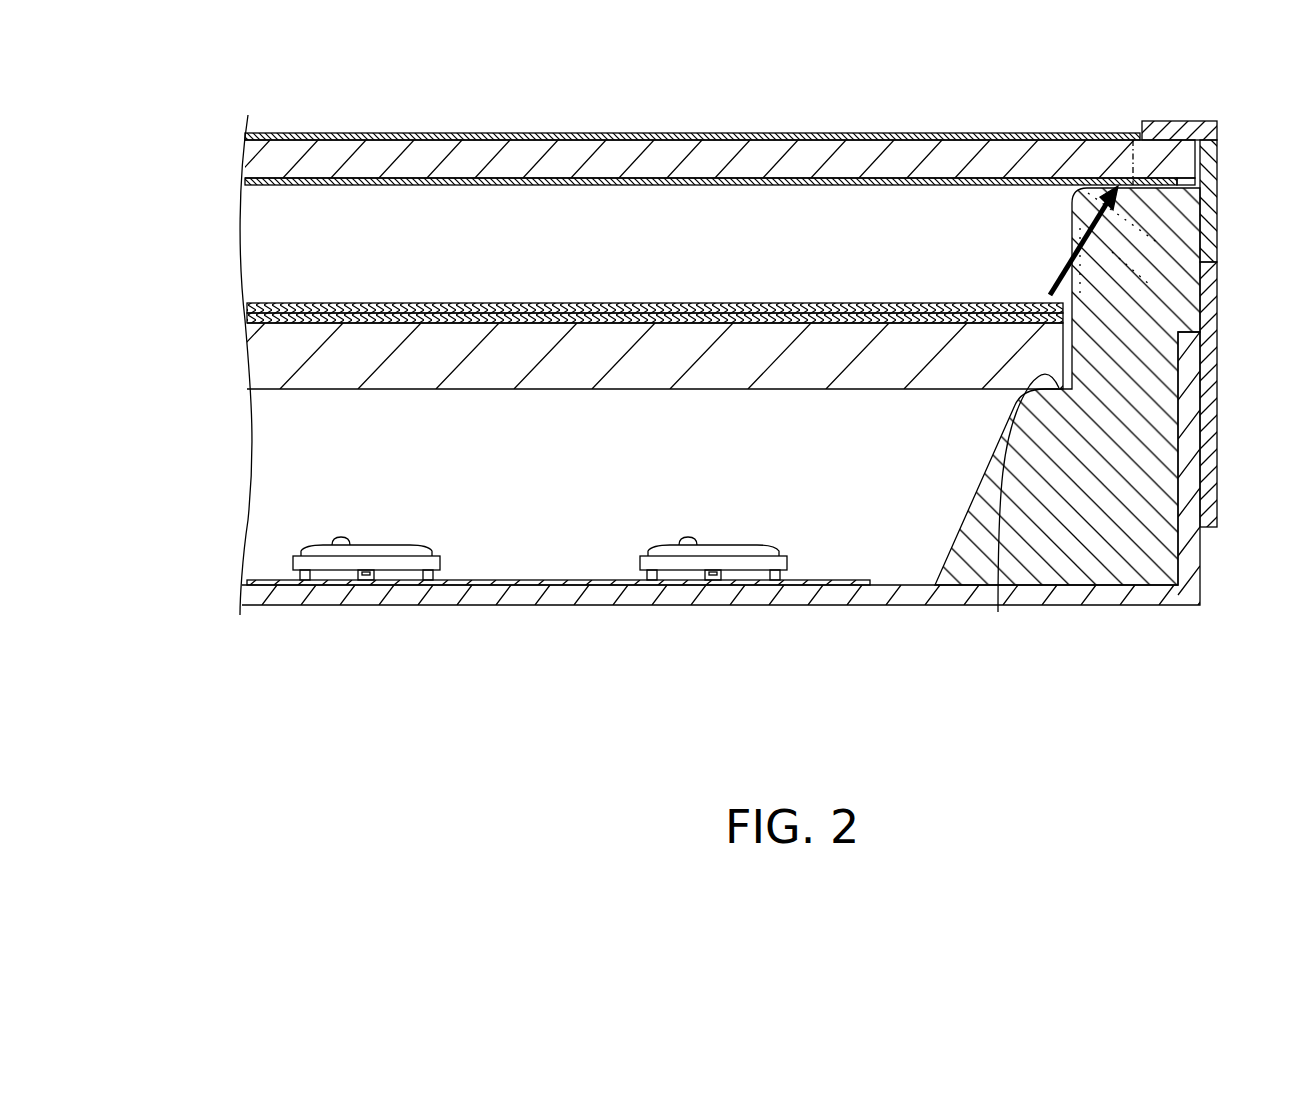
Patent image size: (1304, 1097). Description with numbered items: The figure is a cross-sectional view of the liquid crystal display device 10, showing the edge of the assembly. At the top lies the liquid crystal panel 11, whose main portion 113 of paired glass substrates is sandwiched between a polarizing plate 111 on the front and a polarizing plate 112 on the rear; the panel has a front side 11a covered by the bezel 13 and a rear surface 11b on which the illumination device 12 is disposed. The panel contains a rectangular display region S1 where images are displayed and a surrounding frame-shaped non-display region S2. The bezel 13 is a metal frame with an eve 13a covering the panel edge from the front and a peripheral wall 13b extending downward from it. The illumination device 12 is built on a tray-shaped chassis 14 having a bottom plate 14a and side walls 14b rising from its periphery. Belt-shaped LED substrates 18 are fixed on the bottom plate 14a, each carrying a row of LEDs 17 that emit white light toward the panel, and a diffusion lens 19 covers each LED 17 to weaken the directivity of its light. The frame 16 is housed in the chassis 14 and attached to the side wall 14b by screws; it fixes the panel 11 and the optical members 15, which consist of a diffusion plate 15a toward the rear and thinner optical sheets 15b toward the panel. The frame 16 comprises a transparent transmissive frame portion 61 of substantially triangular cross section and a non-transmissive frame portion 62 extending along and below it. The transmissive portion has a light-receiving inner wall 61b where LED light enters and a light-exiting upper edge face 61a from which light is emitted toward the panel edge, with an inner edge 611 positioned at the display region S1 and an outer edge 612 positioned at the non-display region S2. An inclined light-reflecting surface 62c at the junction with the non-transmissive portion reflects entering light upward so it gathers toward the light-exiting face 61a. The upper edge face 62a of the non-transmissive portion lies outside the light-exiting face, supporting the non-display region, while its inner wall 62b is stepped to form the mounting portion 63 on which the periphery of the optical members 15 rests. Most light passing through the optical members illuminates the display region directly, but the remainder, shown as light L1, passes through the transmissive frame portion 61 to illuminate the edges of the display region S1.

The liquid crystal display device 10 is at (1170, 700).
The liquid crystal panel 11 is at (699, 159).
The polarizing plate 111 is at (653, 124).
The polarizing plate 112 is at (666, 196).
The main portion 113 is at (223, 176).
The front side 11a is at (524, 101).
The rear surface 11b is at (480, 143).
The illumination device 12 is at (880, 646).
The bezel 13 is at (1210, 273).
The eve 13a is at (1179, 80).
The peripheral wall 13b is at (1239, 394).
The chassis 14 is at (755, 515).
The bottom plate 14a is at (799, 649).
The side wall 14b is at (1242, 558).
The optical members 15 is at (637, 343).
The diffusion plate 15a is at (657, 356).
The optical sheets 15b is at (627, 315).
The frame 16 is at (1225, 373).
The LED 17 is at (372, 612).
The LED substrate 18 is at (558, 623).
The diffusion lens 19 is at (366, 597).
The transmissive frame portion 61 is at (1099, 189).
The inner edge 611 is at (1034, 155).
The outer edge 612 is at (1173, 117).
The light-exiting upper edge face 61a is at (1127, 103).
The light-receiving inner wall 61b is at (1007, 153).
The non-transmissive frame portion 62 is at (1104, 327).
The upper edge face 62a is at (1211, 111).
The inner wall 62b is at (1164, 323).
The light-reflecting surface 62c is at (1185, 228).
The mounting portion 63 is at (1025, 528).
The display region S1 is at (612, 113).
The non-display region S2 is at (1145, 134).
The light L1 is at (1084, 190).